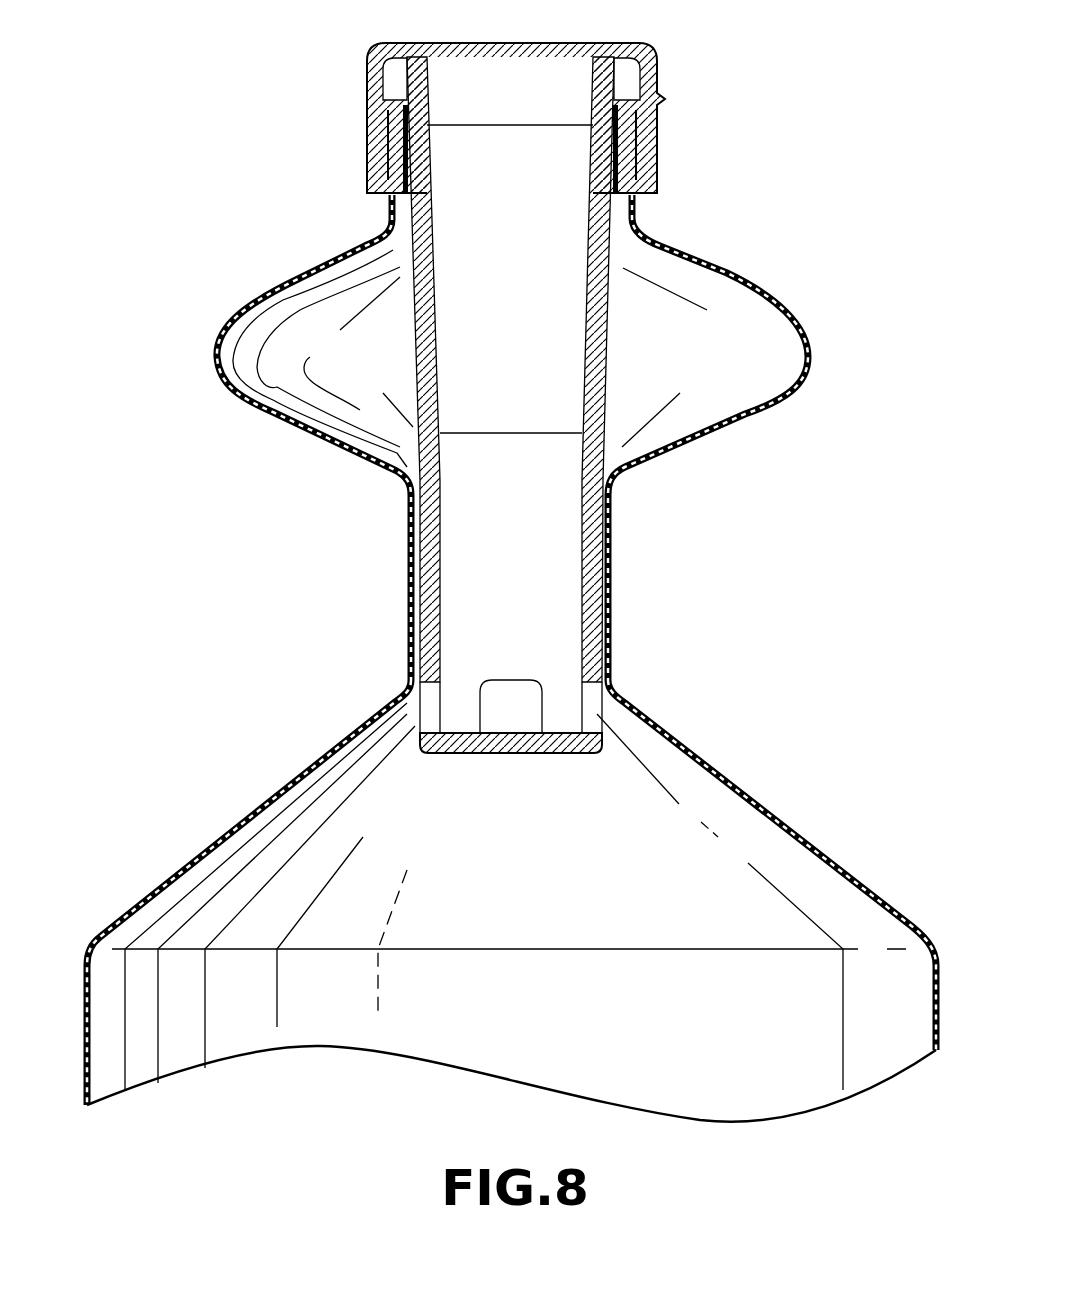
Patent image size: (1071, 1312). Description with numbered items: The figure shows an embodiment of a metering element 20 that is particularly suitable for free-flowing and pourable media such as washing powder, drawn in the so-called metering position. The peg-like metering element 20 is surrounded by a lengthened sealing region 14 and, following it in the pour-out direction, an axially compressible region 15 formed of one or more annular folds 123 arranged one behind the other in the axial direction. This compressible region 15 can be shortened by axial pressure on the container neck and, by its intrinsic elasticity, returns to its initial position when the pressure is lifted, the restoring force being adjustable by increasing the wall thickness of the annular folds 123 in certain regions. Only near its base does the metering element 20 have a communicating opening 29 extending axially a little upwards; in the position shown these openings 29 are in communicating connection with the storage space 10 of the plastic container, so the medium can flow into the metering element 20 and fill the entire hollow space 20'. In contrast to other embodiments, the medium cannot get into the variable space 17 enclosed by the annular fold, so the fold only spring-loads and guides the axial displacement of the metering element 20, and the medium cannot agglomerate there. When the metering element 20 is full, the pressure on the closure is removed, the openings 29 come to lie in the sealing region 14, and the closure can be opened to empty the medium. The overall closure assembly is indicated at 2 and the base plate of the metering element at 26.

The closure assembly 2 is at (687, 97).
The annular folds 123 is at (740, 282).
The axially compressible region 15 is at (382, 478).
The sealing region 14 is at (382, 656).
The hollow space 20' is at (510, 279).
The variable space 17 is at (686, 366).
The metering element 20 is at (568, 369).
The communicating opening 29 is at (428, 716).
The bottom plate 26 is at (471, 753).
The storage space 10 is at (525, 924).